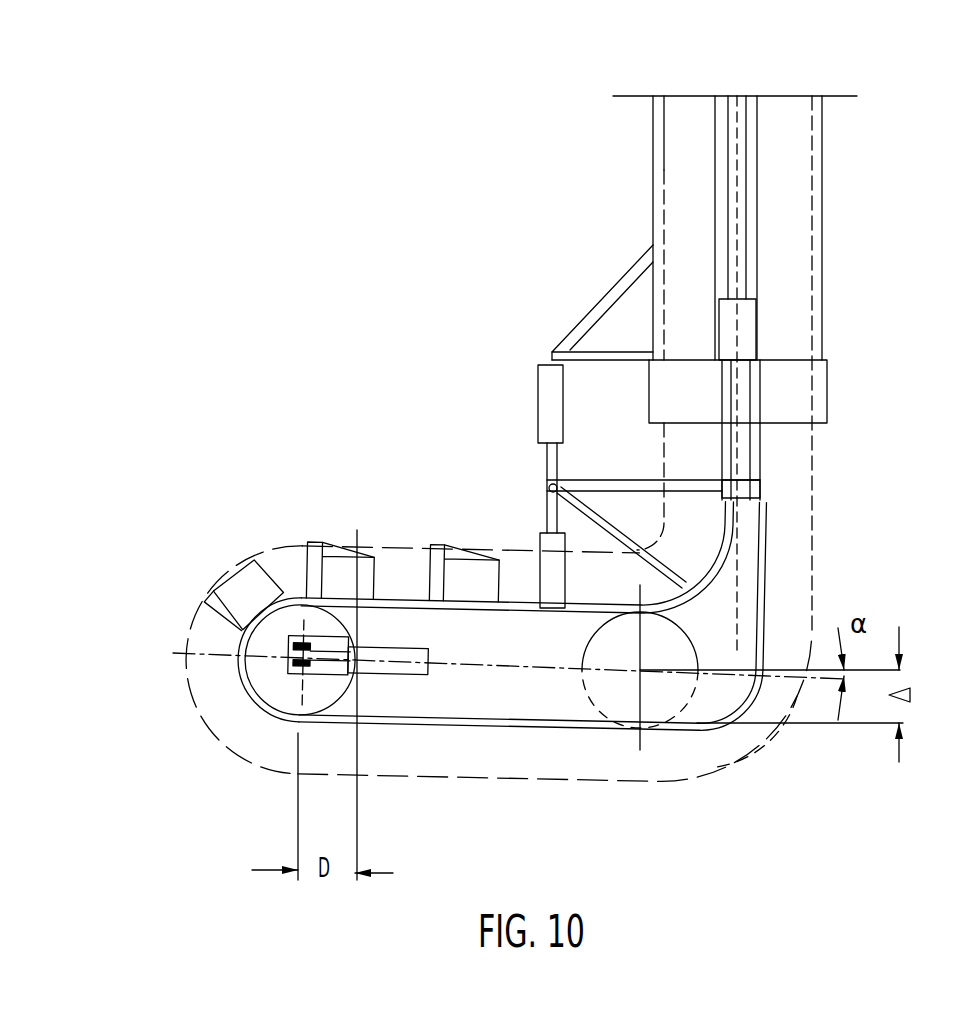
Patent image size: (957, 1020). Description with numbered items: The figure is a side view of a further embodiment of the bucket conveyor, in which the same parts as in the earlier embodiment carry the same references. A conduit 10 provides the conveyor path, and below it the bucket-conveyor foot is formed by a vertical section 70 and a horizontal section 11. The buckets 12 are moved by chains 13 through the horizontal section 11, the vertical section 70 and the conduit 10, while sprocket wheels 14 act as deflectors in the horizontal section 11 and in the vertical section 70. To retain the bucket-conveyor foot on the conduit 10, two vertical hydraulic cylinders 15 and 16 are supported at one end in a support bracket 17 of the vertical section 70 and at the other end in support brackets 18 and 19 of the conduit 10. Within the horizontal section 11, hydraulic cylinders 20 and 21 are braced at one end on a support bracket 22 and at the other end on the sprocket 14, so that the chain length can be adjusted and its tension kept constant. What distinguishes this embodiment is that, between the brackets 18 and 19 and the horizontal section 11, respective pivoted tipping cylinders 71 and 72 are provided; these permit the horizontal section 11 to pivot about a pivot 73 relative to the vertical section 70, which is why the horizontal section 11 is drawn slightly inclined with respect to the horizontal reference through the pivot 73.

The conduit 10 is at (779, 373).
The horizontal section 11 is at (489, 679).
The buckets 12 is at (402, 517).
The chains 13 is at (625, 718).
The sprocket wheels 14 is at (214, 681).
The vertical hydraulic cylinder 15 is at (455, 390).
The vertical hydraulic cylinder 16 is at (799, 379).
The support bracket 17 is at (602, 302).
The support bracket 18 is at (653, 473).
The support bracket 19 is at (850, 449).
The hydraulic cylinder 20 is at (340, 572).
The hydraulic cylinder 21 is at (563, 694).
The support bracket 22 is at (529, 681).
The vertical section 70 is at (623, 515).
The tipping cylinder 71 is at (455, 478).
The tipping cylinder 72 is at (795, 642).
The pivot 73 is at (712, 725).